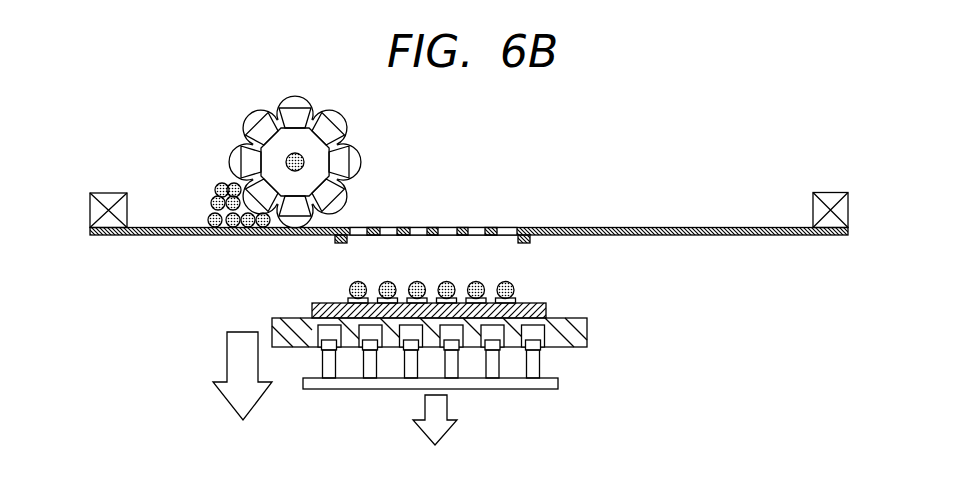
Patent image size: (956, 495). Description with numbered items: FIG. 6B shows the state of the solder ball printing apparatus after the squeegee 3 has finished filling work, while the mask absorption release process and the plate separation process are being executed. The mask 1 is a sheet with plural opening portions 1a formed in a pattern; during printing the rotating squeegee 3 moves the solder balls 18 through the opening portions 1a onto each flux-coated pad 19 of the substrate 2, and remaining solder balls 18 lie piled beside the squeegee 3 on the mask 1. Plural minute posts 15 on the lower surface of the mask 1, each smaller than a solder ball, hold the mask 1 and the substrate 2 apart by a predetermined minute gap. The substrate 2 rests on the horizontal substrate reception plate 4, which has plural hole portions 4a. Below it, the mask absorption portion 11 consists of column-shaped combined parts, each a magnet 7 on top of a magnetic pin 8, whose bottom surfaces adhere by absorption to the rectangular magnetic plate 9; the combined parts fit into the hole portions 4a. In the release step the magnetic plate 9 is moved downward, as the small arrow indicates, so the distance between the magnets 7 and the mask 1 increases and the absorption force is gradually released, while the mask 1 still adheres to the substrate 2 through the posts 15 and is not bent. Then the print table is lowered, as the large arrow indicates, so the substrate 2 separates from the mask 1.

The mask 1 is at (678, 227).
The opening portions 1a is at (418, 227).
The substrate 2 is at (312, 307).
The squeegee 3 is at (232, 151).
The substrate reception plate 4 is at (459, 348).
The hole portions 4a is at (325, 333).
The magnets 7 is at (535, 345).
The magnetic pins 8 is at (533, 370).
The magnetic plate 9 is at (380, 389).
The mask absorption portion 11 is at (488, 390).
The posts 15 is at (532, 240).
The solder balls 18 is at (212, 198).
The pad 19 is at (348, 300).